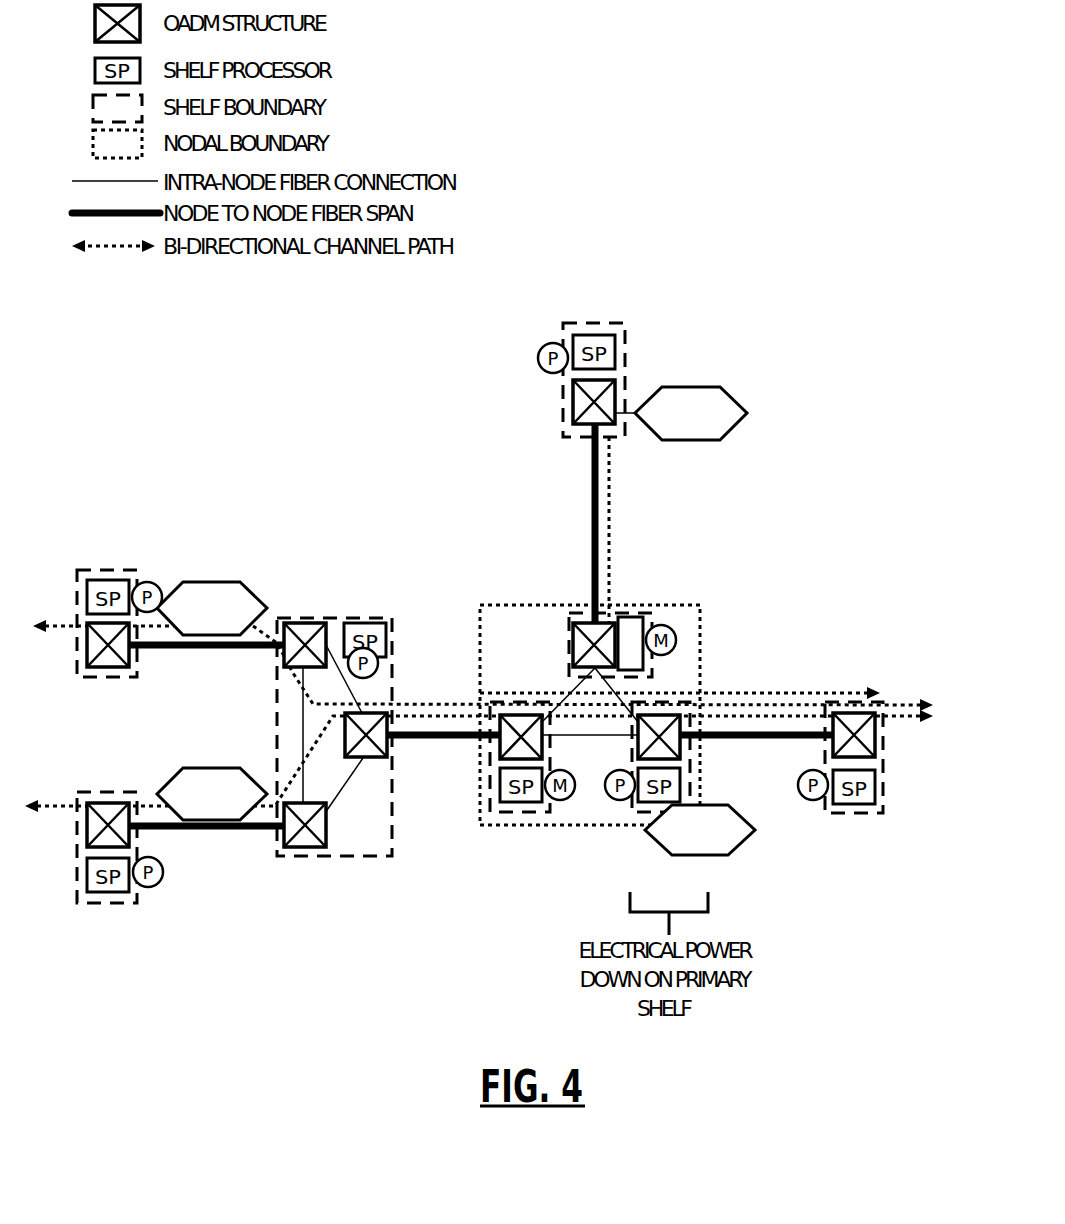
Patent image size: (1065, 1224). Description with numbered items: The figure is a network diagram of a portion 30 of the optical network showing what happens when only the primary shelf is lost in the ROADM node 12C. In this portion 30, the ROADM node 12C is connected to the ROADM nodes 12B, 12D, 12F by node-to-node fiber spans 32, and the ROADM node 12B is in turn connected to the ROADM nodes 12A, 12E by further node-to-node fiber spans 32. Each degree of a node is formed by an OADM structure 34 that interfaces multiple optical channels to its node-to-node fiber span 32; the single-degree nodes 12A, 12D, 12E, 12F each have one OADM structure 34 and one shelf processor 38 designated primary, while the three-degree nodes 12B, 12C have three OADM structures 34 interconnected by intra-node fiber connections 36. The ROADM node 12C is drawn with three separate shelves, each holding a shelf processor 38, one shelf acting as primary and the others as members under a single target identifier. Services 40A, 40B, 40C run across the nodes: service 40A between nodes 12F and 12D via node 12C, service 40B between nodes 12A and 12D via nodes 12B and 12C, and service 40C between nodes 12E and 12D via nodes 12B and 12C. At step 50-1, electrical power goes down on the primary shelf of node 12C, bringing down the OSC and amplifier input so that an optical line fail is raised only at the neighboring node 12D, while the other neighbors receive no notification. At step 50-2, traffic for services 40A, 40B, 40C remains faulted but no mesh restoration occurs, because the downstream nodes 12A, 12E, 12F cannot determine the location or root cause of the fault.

The portion of the optical network 30 is at (733, 152).
The ROADM node 12A is at (80, 570).
The ROADM node 12B is at (350, 863).
The ROADM node 12C is at (680, 607).
The ROADM node 12D is at (873, 817).
The ROADM node 12E is at (117, 792).
The ROADM node 12F is at (598, 323).
The node-to-node fiber span 32 is at (592, 502).
The OADM structure 34 is at (570, 407).
The intra-node fiber connection 36 is at (341, 776).
The shelf processor 38 is at (615, 352).
The service 40A is at (788, 692).
The service 40B is at (910, 705).
The service 40C is at (905, 717).
The step 50-1 is at (700, 830).
The step 50-2 is at (452, 603).